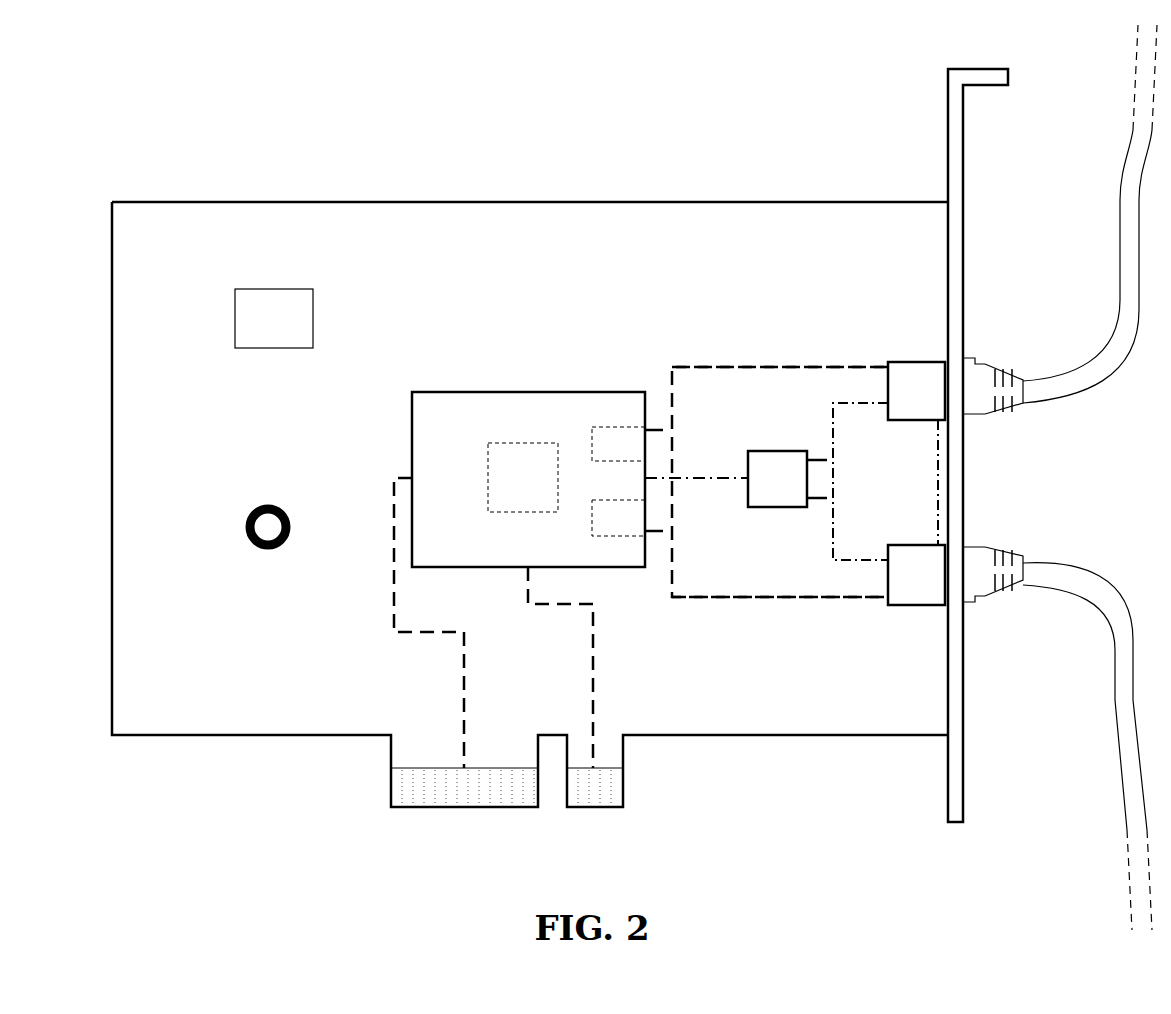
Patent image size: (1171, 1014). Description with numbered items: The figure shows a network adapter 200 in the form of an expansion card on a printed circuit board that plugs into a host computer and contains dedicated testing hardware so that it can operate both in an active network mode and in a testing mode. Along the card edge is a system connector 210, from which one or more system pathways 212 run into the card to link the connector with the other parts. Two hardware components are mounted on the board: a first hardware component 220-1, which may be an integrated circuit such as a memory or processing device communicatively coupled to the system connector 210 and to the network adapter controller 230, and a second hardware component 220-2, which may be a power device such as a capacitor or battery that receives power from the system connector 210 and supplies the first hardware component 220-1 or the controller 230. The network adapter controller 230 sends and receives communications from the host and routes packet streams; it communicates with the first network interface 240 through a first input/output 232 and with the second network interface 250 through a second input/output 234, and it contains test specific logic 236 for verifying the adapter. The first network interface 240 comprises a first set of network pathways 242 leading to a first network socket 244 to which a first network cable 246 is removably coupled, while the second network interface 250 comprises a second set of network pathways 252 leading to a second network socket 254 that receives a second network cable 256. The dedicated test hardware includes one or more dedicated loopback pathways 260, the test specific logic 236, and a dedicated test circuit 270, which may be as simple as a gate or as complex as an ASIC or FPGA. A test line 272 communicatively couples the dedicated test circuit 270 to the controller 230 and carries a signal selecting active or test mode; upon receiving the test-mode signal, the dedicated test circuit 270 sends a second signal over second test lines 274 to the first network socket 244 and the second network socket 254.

The network adapter 200 is at (493, 190).
The system connector 210 is at (374, 794).
The system pathways 212 is at (585, 718).
The first hardware component 220-1 is at (274, 318).
The second hardware component 220-2 is at (262, 549).
The network adapter controller 230 is at (525, 392).
The first input/output 232 is at (618, 444).
The second input/output 234 is at (618, 518).
The test specific logic 236 is at (523, 477).
The first network interface 240 is at (820, 293).
The first set of network pathways 242 is at (746, 354).
The first network socket 244 is at (916, 391).
The first network cable 246 is at (1120, 322).
The second network interface 250 is at (825, 647).
The second set of network pathways 252 is at (725, 607).
The second network socket 254 is at (916, 575).
The second network cable 256 is at (1115, 640).
The dedicated loopback pathways 260 is at (929, 489).
The dedicated test circuit 270 is at (787, 479).
The test line 272 is at (706, 469).
The second test lines 274 is at (843, 445).